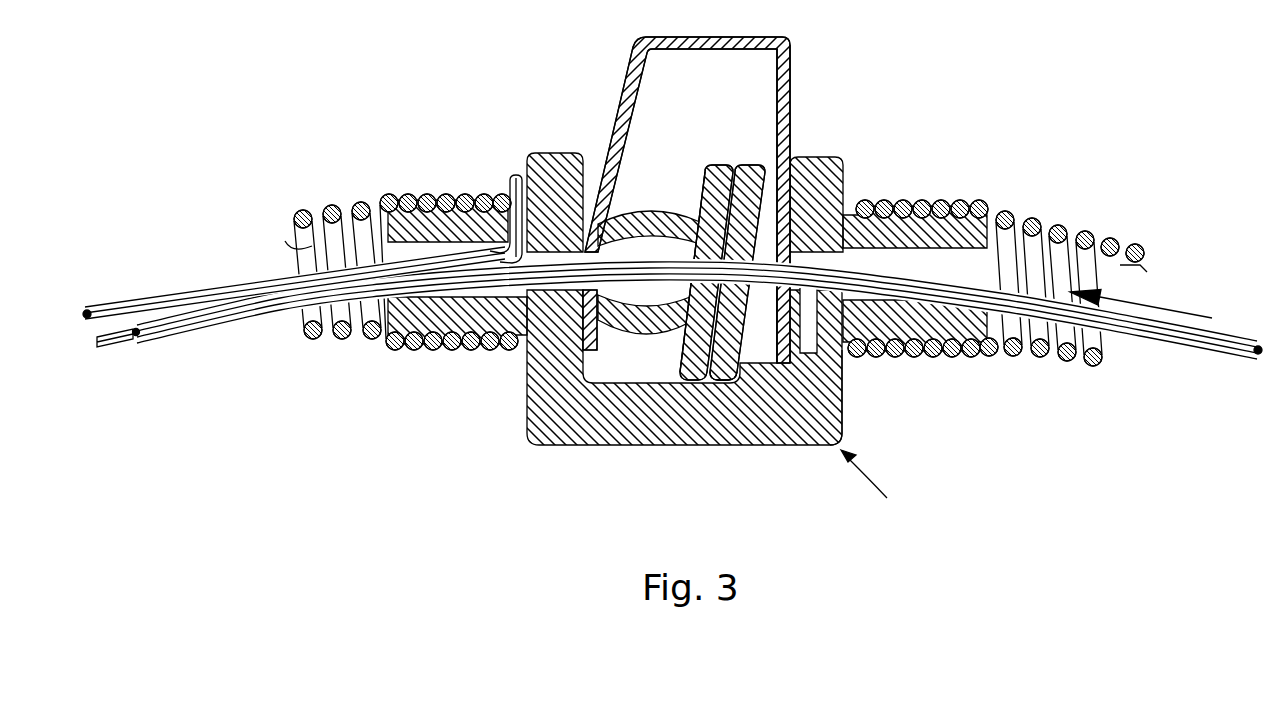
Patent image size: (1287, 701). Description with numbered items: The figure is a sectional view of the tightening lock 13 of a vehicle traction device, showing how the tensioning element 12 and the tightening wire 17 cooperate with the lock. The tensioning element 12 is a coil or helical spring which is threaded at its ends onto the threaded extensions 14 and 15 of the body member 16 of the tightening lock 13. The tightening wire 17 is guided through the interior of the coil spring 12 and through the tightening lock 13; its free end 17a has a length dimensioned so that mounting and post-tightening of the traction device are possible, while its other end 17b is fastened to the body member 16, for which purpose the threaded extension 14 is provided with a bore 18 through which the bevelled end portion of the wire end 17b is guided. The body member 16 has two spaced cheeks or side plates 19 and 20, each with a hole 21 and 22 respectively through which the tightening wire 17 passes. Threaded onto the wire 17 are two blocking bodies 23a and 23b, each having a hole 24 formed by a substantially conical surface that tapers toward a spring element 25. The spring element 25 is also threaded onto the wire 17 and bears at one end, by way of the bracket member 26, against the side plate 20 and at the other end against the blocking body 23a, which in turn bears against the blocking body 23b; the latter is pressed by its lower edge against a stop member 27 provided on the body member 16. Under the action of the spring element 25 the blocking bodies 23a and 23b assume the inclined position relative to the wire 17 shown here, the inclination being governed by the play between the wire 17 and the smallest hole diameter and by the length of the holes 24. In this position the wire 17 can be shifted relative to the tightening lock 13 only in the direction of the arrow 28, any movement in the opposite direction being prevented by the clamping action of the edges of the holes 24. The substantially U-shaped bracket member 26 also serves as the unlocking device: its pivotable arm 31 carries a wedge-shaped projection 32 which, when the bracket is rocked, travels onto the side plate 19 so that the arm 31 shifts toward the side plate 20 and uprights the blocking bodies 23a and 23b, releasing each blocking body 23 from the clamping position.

The tensioning element 12 is at (300, 212).
The tightening lock 13 is at (878, 484).
The threaded extension 14 is at (433, 342).
The threaded extension 15 is at (931, 349).
The body member 16 is at (610, 436).
The tightening wire 17 is at (669, 278).
The free end 17a is at (100, 336).
The other end 17b is at (149, 307).
The bore 18 is at (512, 215).
The side plate 19 is at (822, 163).
The side plate 20 is at (559, 165).
The hole 21 is at (843, 352).
The hole 22 is at (567, 284).
The blocking body 23 is at (683, 303).
The blocking body 23a is at (696, 381).
The blocking body 23b is at (713, 381).
The hole 24 is at (703, 210).
The spring element 25 is at (642, 219).
The bracket member 26 is at (698, 190).
The stop member 27 is at (727, 385).
The arrow 28 is at (1146, 327).
The pivotable arm 31 is at (788, 82).
The wedge-shaped projection 32 is at (822, 337).